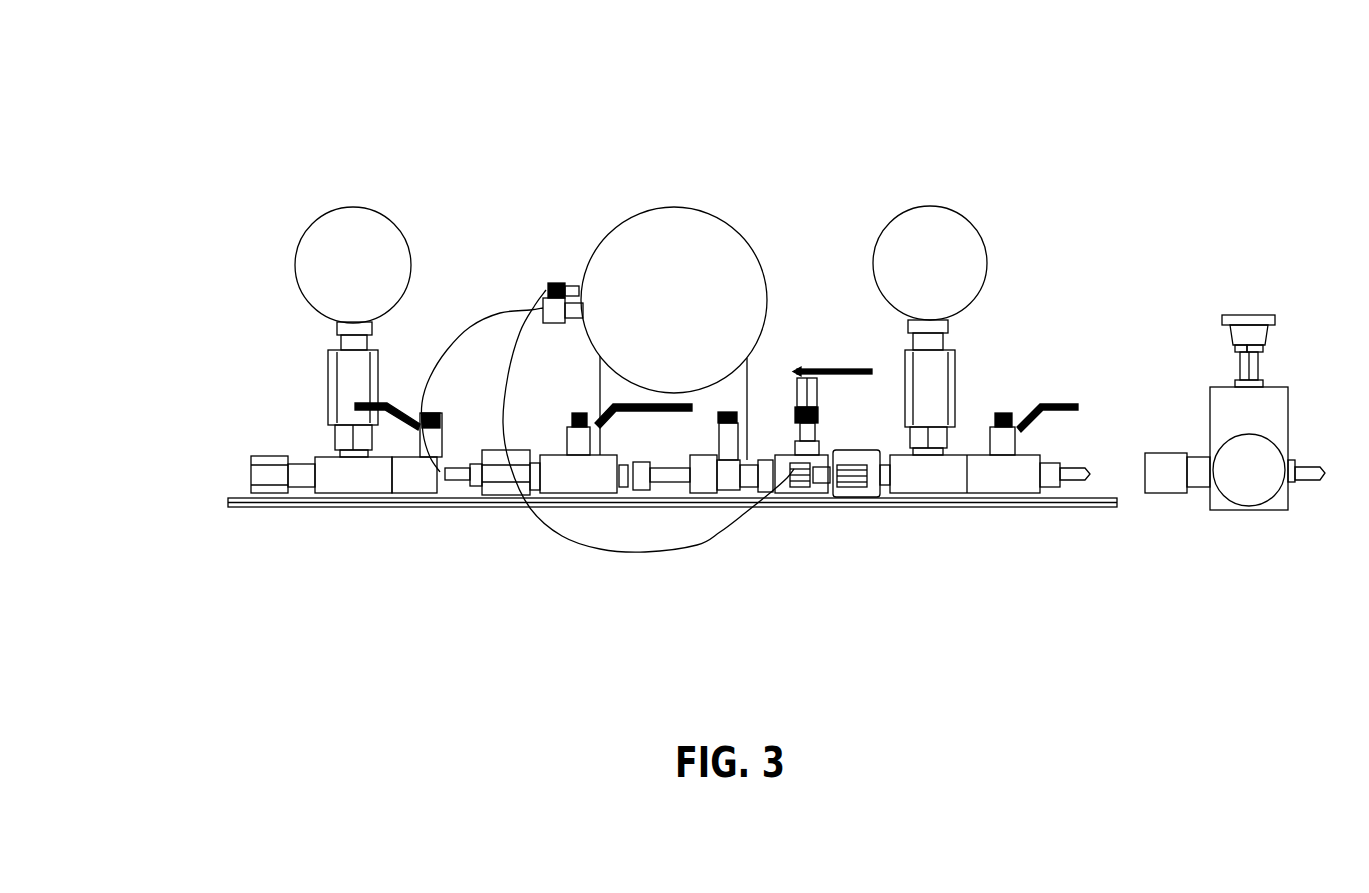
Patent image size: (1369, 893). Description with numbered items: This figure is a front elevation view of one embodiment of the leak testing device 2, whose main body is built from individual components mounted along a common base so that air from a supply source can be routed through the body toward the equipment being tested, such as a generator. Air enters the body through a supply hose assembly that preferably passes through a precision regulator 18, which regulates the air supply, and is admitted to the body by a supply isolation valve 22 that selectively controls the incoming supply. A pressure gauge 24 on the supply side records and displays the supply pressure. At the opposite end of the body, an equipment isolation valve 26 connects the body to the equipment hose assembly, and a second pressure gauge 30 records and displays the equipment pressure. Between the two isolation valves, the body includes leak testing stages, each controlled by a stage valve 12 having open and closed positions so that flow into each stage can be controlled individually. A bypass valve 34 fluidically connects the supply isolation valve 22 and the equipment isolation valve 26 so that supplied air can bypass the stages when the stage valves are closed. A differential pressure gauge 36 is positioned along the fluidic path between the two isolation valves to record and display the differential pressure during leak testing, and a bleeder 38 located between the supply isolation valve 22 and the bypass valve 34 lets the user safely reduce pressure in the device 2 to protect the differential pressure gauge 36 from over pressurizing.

The device 2 is at (210, 291).
The stage valve 12 is at (747, 462).
The precision regulator 18 is at (1240, 510).
The supply isolation valve 22 is at (1042, 405).
The pressure gauge 24 is at (935, 207).
The equipment isolation valve 26 is at (385, 403).
The pressure gauge 30 is at (354, 208).
The bypass valve 34 is at (527, 497).
The differential pressure gauge 36 is at (671, 207).
The bleeder 38 is at (803, 368).